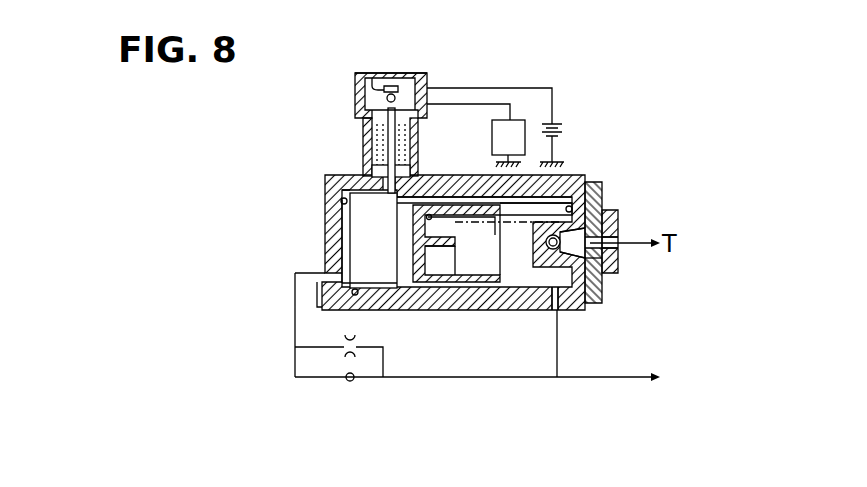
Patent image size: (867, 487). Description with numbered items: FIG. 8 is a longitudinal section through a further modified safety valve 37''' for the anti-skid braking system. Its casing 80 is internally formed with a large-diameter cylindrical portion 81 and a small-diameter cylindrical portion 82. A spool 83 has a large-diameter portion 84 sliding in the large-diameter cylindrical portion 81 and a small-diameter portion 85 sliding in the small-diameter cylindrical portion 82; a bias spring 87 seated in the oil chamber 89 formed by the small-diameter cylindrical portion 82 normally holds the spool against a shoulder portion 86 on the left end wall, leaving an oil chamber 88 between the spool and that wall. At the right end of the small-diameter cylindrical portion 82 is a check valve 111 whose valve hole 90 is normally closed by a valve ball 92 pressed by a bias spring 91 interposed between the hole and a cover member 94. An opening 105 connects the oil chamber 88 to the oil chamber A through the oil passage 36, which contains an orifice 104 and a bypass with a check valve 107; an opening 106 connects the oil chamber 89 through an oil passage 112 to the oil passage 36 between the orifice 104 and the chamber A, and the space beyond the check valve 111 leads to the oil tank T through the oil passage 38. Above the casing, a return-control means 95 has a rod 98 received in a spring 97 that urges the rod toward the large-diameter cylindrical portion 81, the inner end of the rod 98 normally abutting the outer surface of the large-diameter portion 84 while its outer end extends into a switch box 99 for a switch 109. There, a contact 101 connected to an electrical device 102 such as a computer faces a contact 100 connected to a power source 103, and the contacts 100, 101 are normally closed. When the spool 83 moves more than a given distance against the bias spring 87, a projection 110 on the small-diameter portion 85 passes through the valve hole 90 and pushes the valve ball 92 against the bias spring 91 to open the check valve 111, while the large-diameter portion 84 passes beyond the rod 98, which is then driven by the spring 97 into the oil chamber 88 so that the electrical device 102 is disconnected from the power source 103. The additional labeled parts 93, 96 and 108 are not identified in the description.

The safety valve 37''' is at (423, 216).
The oil passage 36 is at (626, 380).
The oil passage 38 is at (619, 248).
The casing 80 is at (341, 215).
The large-diameter cylindrical portion 81 is at (470, 198).
The small-diameter cylindrical portion 82 is at (543, 192).
The spool 83 is at (430, 256).
The large-diameter portion 84 is at (395, 248).
The small-diameter portion 85 is at (356, 290).
The shoulder portion 86 is at (340, 200).
The bias spring 87 is at (421, 212).
The oil chamber 88 is at (344, 242).
The oil chamber 89 is at (460, 259).
The valve hole 90 is at (513, 245).
The bias spring 91 is at (570, 211).
The valve ball 92 is at (546, 237).
The outlet passage 93 is at (604, 262).
The cover member 94 is at (614, 212).
The return-control means 95 is at (358, 159).
The spring 96 is at (376, 130).
The spring 97 is at (412, 130).
The rod 98 is at (396, 158).
The switch box 99 is at (359, 74).
The contact 100 is at (383, 70).
The contact 101 is at (384, 94).
The electrical device 102 is at (492, 132).
The power source 103 is at (568, 132).
The orifice 104 is at (348, 340).
The opening 105 is at (317, 325).
The opening 106 is at (555, 311).
The check valve 107 is at (350, 381).
The switch housing 108 is at (295, 358).
The switch 109 is at (416, 68).
The projection 110 is at (507, 231).
The check valve 111 is at (607, 296).
The oil passage 112 is at (559, 352).